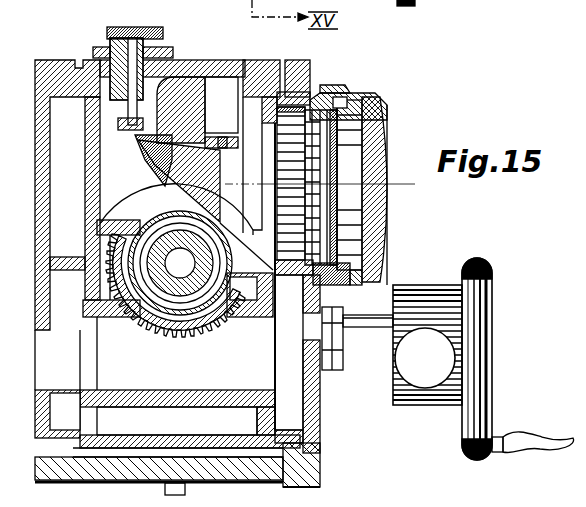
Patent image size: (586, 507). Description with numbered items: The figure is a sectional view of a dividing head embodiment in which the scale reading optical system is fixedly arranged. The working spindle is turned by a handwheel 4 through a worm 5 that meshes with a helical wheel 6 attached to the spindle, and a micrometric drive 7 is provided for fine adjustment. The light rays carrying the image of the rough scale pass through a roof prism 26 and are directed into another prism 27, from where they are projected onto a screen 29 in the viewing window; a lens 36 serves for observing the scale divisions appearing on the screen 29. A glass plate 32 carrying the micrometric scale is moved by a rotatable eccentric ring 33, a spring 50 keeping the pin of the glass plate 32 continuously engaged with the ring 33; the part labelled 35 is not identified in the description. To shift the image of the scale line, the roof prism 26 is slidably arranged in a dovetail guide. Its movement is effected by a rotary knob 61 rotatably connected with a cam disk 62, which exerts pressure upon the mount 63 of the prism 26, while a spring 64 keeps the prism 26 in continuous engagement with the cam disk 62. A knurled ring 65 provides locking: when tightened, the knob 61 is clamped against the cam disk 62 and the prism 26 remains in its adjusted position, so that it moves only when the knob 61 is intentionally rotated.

The handwheel 4 is at (487, 381).
The worm 5 is at (176, 304).
The helical wheel 6 is at (128, 323).
The micrometric drive 7 is at (403, 357).
The roof prism 26 is at (203, 109).
The prism 27 is at (148, 168).
The screen 29 is at (350, 205).
The glass plate 32 is at (335, 193).
The eccentric ring 33 is at (354, 95).
The lens mount 35 is at (382, 197).
The lens 36 is at (380, 156).
The spring 50 is at (331, 88).
The rotary knob 61 is at (143, 28).
The cam disk 62 is at (118, 124).
The mount 63 is at (138, 146).
The spring 64 is at (228, 150).
The knurled ring 65 is at (97, 47).